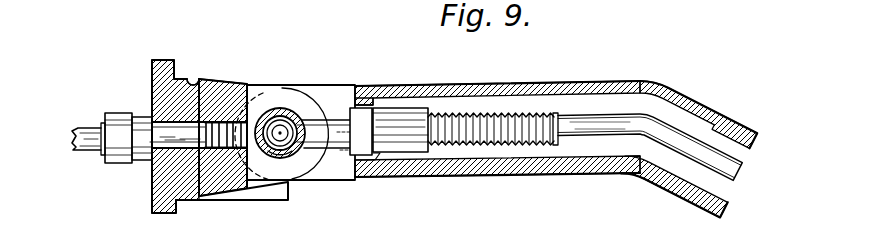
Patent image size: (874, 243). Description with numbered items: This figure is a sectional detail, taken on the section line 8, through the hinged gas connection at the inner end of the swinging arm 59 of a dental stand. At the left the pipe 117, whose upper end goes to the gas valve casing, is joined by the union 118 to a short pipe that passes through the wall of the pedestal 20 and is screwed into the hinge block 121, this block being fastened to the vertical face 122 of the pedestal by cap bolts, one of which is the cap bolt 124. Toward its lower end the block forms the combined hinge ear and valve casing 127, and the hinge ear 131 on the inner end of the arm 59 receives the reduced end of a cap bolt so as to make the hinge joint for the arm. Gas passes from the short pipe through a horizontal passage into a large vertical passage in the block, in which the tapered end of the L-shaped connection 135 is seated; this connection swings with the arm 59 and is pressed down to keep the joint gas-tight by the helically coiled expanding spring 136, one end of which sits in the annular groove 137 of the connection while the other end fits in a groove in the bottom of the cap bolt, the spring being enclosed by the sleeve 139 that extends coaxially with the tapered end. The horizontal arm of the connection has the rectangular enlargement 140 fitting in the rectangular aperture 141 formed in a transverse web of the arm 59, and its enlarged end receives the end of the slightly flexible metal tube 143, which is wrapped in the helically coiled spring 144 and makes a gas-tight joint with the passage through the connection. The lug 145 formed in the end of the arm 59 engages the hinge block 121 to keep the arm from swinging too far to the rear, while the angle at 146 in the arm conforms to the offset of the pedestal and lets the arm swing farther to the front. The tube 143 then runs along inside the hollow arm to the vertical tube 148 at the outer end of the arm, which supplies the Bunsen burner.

The section line 8 is at (57, 125).
The pedestal 20 is at (152, 197).
The arm 59 is at (550, 83).
The pipe 117 is at (83, 140).
The union 118 is at (118, 124).
The hinge block 121 is at (218, 173).
The vertical face 122 is at (193, 81).
The cap bolt 124 is at (157, 158).
The combined hinge ear and valve casing 127 is at (290, 93).
The hinge ear 131 is at (312, 90).
The L-shaped connection 135 is at (332, 143).
The helically coiled expanding spring 136 is at (267, 110).
The annular groove 137 is at (278, 108).
The sleeve 139 is at (283, 157).
The rectangular enlargement 140 is at (368, 104).
The rectangular aperture 141 is at (363, 160).
The slightly flexible metal tube 143 is at (588, 125).
The helically coiled spring 144 is at (463, 115).
The lug 145 is at (341, 95).
The angle 146 is at (657, 84).
The vertical tube 148 is at (397, 125).